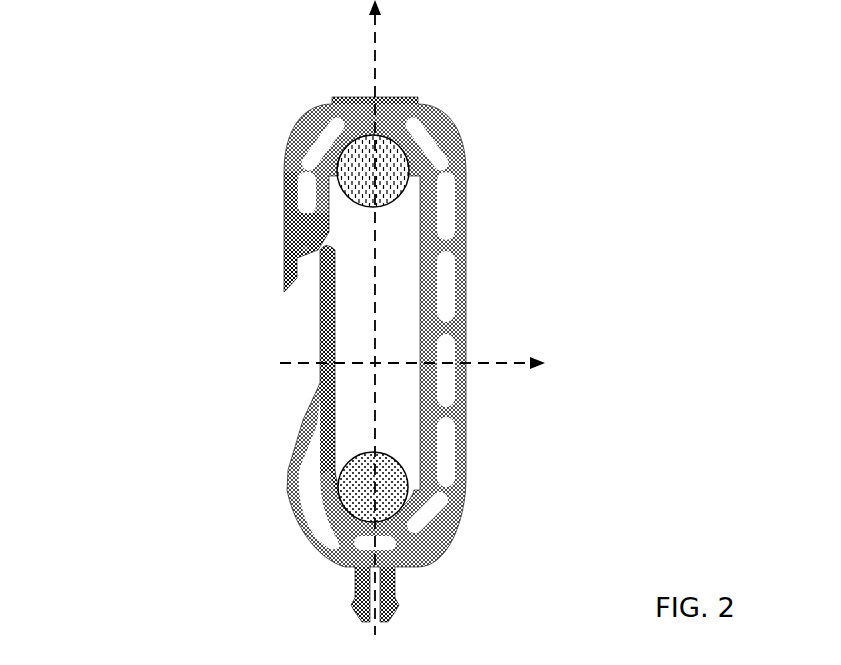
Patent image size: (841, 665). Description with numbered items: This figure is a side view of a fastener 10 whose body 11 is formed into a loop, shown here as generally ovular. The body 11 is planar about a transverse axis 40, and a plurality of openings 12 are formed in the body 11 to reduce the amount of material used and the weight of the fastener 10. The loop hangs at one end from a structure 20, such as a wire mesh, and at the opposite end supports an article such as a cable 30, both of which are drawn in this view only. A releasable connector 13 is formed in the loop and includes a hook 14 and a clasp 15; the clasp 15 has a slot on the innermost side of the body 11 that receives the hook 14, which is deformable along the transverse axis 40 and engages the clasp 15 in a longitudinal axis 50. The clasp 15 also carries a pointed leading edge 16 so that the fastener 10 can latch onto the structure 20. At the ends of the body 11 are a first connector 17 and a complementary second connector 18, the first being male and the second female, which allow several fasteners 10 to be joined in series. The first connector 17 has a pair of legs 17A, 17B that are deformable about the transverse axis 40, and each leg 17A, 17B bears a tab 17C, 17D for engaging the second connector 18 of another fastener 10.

The fastener 10 is at (305, 331).
The body 11 is at (465, 222).
The openings 12 is at (305, 195).
The releasable connector 13 is at (148, 276).
The hook 14 is at (322, 246).
The clasp 15 is at (298, 250).
The pointed leading edge 16 is at (288, 283).
The first connector 17 is at (359, 604).
The leg 17A is at (357, 577).
The leg 17B is at (397, 580).
The tab 17C is at (353, 607).
The tab 17D is at (397, 610).
The second connector 18 is at (392, 78).
The structure 20 is at (392, 170).
The cable 30 is at (382, 488).
The transverse axis 40 is at (392, 366).
The longitudinal axis 50 is at (373, 332).